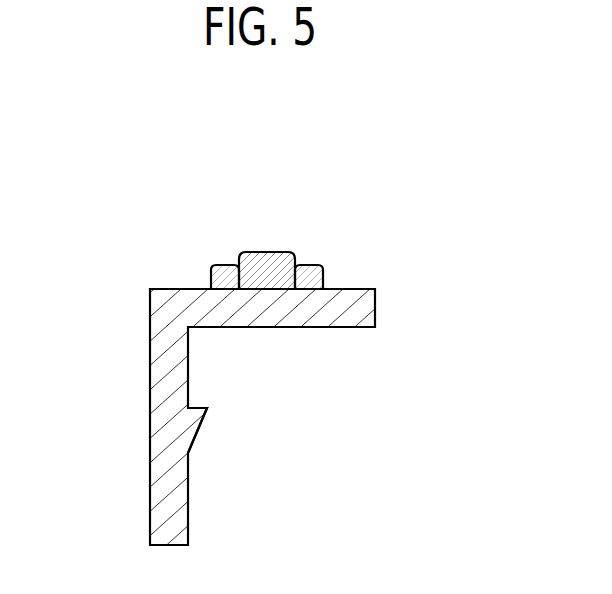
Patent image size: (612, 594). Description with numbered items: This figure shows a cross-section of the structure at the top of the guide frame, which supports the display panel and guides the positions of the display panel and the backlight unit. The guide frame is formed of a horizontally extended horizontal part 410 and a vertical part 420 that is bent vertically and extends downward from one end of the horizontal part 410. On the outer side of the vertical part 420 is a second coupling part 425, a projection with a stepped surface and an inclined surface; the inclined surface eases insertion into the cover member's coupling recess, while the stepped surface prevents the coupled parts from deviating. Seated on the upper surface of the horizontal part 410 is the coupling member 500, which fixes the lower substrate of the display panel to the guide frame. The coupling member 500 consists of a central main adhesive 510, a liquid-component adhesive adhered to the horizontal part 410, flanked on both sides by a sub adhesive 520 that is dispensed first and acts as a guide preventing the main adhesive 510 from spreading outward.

The coupling member 500 is at (262, 215).
The main adhesive 510 is at (267, 239).
The sub adhesive 520 is at (233, 270).
The horizontal part 410 is at (292, 310).
The vertical part 420 is at (168, 368).
The second coupling part 425 is at (190, 423).